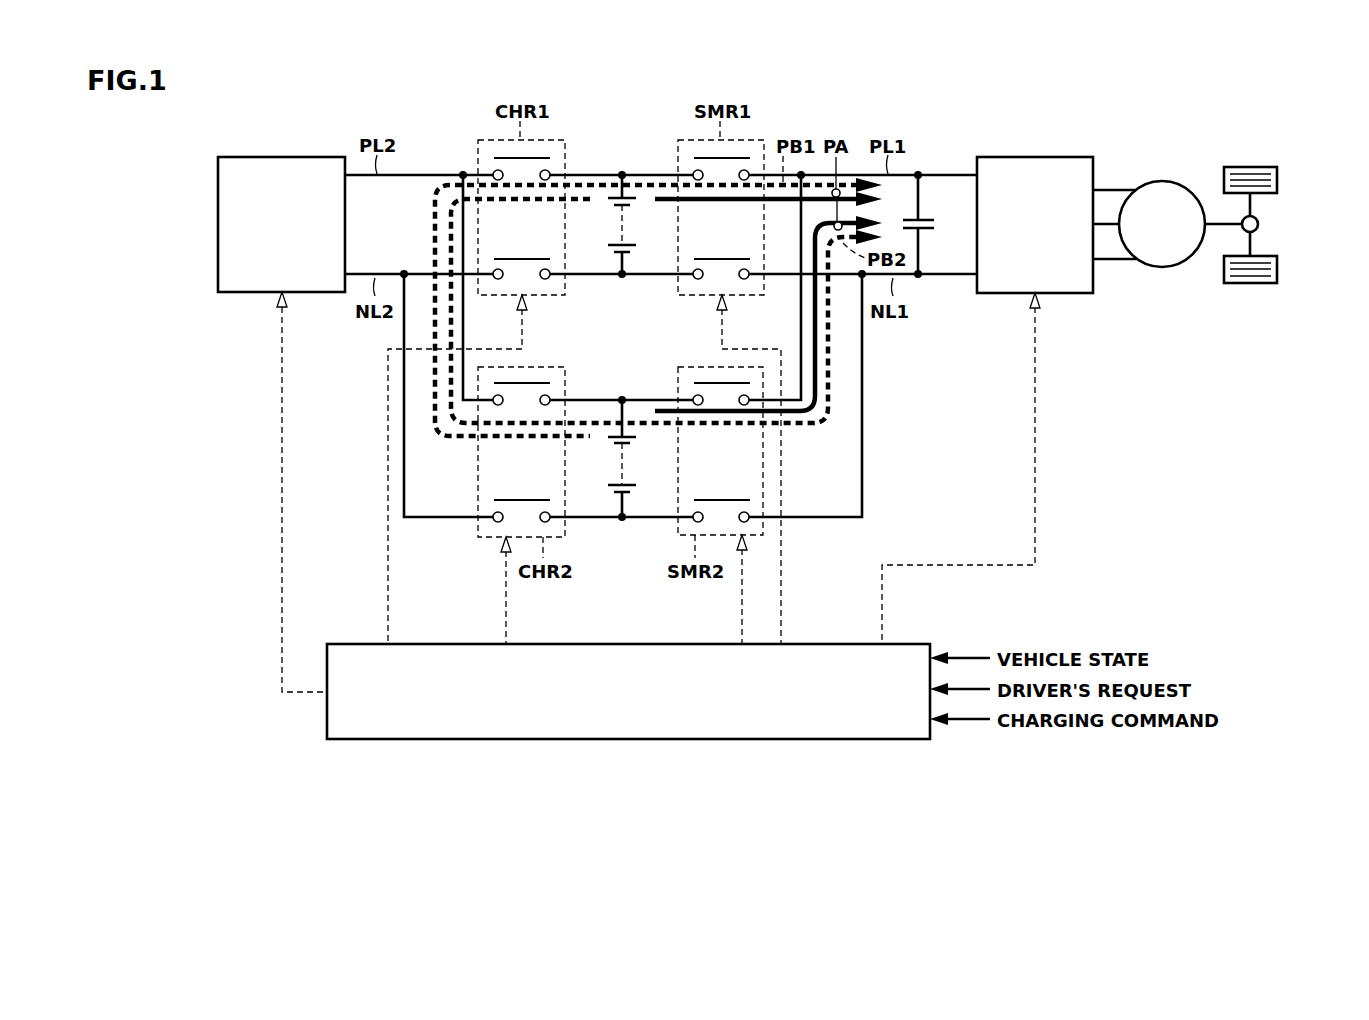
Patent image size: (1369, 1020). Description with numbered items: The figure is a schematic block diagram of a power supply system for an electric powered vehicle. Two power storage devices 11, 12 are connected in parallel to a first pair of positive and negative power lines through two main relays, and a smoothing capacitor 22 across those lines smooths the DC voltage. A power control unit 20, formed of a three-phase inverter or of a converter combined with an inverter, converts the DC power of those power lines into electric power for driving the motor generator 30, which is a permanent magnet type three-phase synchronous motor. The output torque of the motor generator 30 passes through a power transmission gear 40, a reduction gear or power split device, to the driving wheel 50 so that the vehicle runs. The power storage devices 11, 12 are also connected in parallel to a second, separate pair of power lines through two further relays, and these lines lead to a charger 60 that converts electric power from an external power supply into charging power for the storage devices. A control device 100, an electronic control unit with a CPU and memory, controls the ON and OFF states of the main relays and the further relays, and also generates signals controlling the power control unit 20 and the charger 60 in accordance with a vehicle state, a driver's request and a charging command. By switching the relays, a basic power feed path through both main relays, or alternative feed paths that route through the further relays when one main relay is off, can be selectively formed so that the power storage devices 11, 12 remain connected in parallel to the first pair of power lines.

The power storage device 11 is at (626, 223).
The power storage device 12 is at (626, 463).
The power control unit 20 is at (1068, 157).
The smoothing capacitor 22 is at (935, 219).
The motor generator 30 is at (1162, 181).
The power transmission gear 40 is at (1259, 224).
The driving wheel 50 is at (1250, 167).
The charger 60 is at (282, 156).
The control device 100 is at (412, 740).